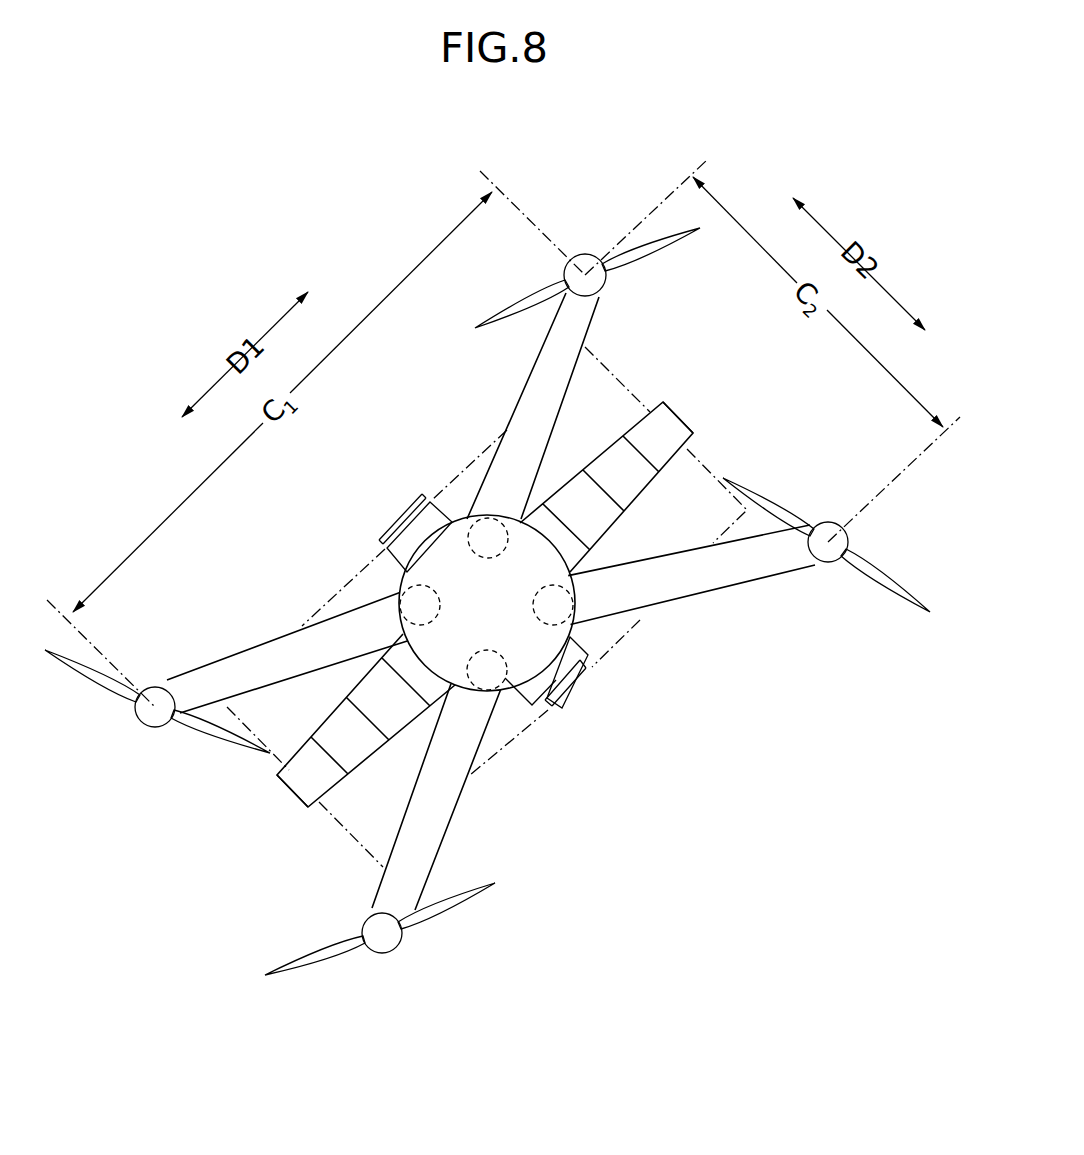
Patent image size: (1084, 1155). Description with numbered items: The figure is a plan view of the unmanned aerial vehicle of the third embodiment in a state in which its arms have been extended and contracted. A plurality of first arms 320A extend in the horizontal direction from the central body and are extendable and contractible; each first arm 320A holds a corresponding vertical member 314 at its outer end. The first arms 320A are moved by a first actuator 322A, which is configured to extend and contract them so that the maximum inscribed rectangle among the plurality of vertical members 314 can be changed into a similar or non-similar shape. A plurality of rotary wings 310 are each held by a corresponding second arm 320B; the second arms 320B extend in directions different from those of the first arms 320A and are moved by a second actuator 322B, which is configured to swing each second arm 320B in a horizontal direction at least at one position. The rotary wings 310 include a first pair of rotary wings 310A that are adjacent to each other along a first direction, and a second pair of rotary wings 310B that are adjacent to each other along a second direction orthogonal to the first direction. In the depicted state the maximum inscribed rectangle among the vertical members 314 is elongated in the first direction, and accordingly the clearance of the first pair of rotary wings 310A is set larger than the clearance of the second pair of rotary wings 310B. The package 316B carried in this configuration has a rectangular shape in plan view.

The rotary wings 310 is at (478, 394).
The first pair of rotary wings 310A is at (503, 320).
The second pair of rotary wings 310B is at (662, 248).
The vertical members 314 is at (703, 401).
The package 316B is at (532, 700).
The first arms 320A is at (640, 497).
The second arms 320B is at (517, 415).
The first actuator 322A is at (520, 622).
The second actuator 322B is at (422, 604).